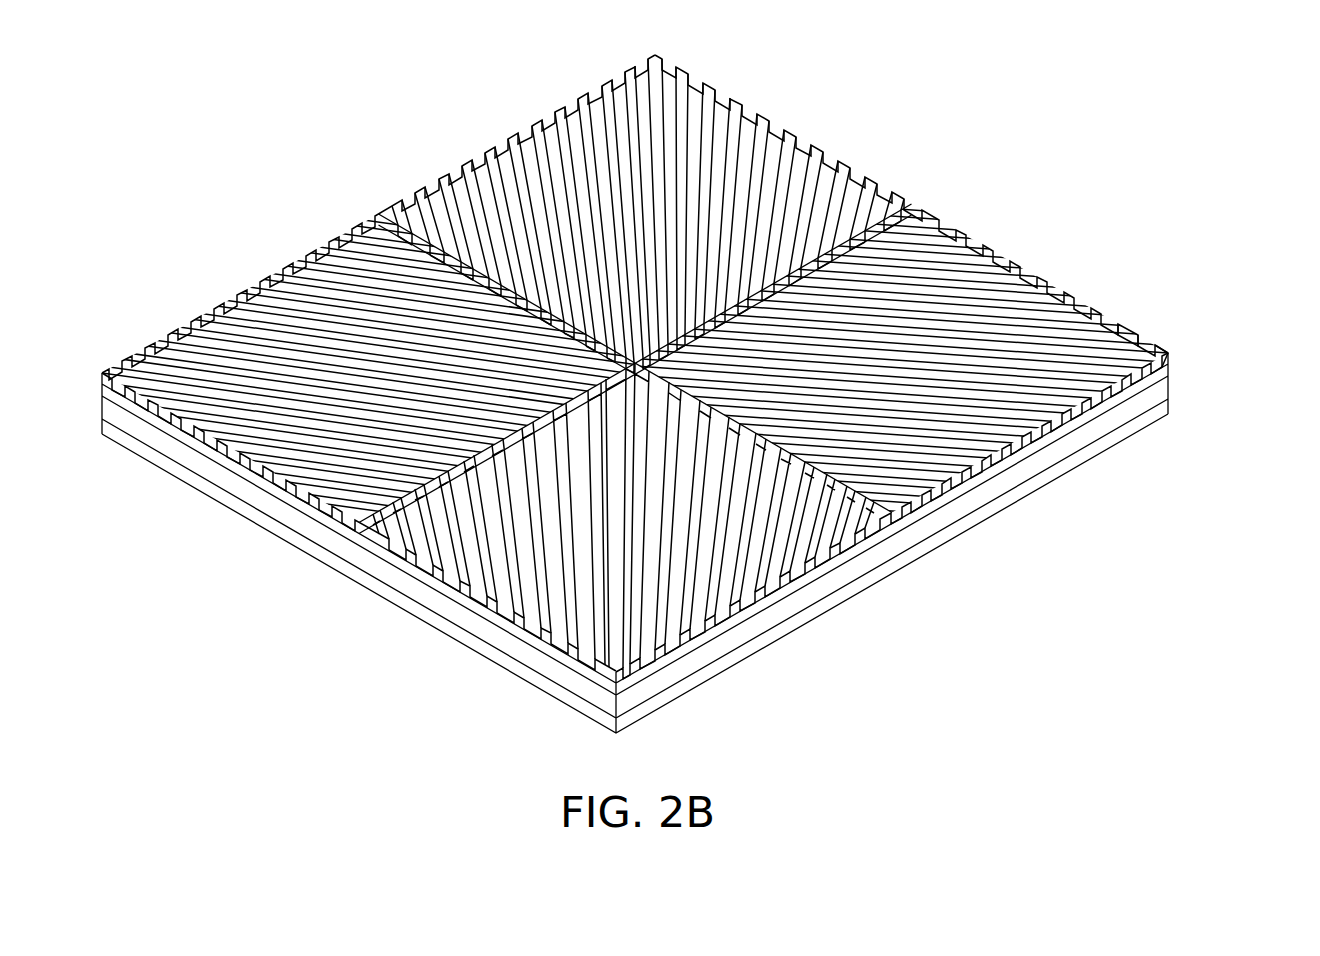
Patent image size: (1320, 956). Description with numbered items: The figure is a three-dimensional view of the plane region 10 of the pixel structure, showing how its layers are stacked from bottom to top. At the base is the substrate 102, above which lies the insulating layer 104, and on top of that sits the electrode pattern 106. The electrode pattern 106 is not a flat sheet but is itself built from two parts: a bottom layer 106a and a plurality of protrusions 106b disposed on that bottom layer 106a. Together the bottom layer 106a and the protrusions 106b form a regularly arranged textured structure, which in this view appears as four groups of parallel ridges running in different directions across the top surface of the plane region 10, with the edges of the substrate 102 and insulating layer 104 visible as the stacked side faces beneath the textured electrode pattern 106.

The plane region 10 is at (348, 183).
The substrate 102 is at (1172, 411).
The insulating layer 104 is at (1172, 388).
The electrode pattern 106 is at (1266, 232).
The bottom layer 106a is at (1170, 356).
The protrusions 106b is at (1134, 347).